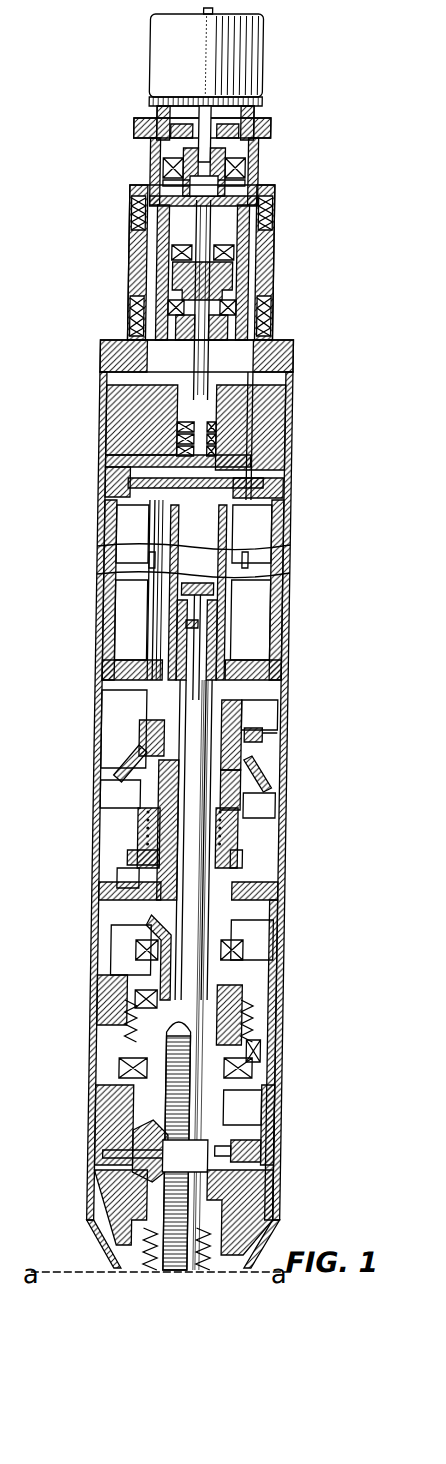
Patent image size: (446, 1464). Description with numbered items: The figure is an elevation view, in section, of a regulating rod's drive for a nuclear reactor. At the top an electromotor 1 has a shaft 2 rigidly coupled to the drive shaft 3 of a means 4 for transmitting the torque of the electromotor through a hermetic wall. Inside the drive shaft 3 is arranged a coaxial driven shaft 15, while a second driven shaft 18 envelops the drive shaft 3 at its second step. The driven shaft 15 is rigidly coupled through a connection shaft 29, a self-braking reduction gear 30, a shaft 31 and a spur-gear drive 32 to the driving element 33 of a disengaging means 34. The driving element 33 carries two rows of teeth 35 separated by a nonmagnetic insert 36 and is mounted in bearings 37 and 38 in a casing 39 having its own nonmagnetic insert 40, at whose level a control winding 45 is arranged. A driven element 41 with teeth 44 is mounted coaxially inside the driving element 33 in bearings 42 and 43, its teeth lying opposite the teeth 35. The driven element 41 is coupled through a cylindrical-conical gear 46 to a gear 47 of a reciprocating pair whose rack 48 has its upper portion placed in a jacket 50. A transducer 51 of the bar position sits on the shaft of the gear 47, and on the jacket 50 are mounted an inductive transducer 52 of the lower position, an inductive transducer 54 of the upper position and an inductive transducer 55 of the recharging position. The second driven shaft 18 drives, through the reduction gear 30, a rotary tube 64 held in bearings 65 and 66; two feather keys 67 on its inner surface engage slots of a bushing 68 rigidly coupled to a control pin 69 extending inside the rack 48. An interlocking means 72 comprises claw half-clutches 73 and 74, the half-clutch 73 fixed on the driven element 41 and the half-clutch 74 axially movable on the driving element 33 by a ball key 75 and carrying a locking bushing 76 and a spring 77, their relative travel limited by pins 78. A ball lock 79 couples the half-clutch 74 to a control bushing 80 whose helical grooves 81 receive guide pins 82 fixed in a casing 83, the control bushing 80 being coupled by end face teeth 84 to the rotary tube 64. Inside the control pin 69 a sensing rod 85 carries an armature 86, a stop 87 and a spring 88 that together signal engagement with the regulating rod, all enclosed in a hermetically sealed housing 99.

The electromotor 1 is at (243, 45).
The shaft 2 is at (204, 110).
The drive shaft 3 is at (212, 190).
The means for transmitting the torque 4 is at (288, 263).
The driven shaft 15 is at (246, 184).
The second driven shaft 18 is at (262, 346).
The connection shaft 29 is at (120, 412).
The self-braking reduction gear 30 is at (310, 422).
The shaft 31 is at (166, 626).
The spur-gear drive 32 is at (122, 885).
The driving element 33 is at (145, 975).
The disengaging means 34 is at (307, 953).
The teeth 35 is at (282, 1005).
The nonmagnetic insert 36 is at (288, 1054).
The bearing 37 is at (278, 900).
The bearing 38 is at (118, 1066).
The casing 39 is at (118, 994).
The nonmagnetic insert 40 is at (192, 1026).
The driven element 41 is at (258, 986).
The bearing 42 is at (165, 958).
The bearing 43 is at (243, 1092).
The teeth 44 is at (132, 1030).
The control winding 45 is at (282, 1030).
The cylindrical-conical gear 46 is at (100, 1121).
The gear 47 is at (160, 1162).
The rack 48 is at (188, 1176).
The jacket 50 is at (232, 650).
The transducer of the position of the bar 51 is at (278, 1152).
The inductive transducer of the lower position 52 is at (250, 594).
The inductive transducer of the upper position 54 is at (286, 562).
The inductive transducer of the recharging position 55 is at (132, 534).
The rotary tube 64 is at (291, 660).
The bearing 65 is at (253, 534).
The bearing 66 is at (291, 682).
The feather keys 67 is at (112, 537).
The bushing 68 is at (204, 584).
The control pin 69 is at (188, 640).
The interlocking means 72 is at (150, 806).
The claw half-clutch 73 is at (140, 938).
The claw half-clutch 74 is at (150, 858).
The ball key 75 is at (252, 878).
The locking bushing 76 is at (262, 772).
The spring 77 is at (158, 816).
The pins 78 is at (262, 797).
The ball lock 79 is at (128, 760).
The control bushing 80 is at (240, 714).
The helical grooves 81 is at (291, 710).
The guide pins 82 is at (273, 736).
The casing 83 is at (112, 786).
The end face teeth 84 is at (170, 706).
The sensing rod 85 is at (204, 692).
The armature 86 is at (178, 598).
The stop 87 is at (157, 606).
The spring 88 is at (228, 625).
The hermetically sealed housing 99 is at (112, 437).